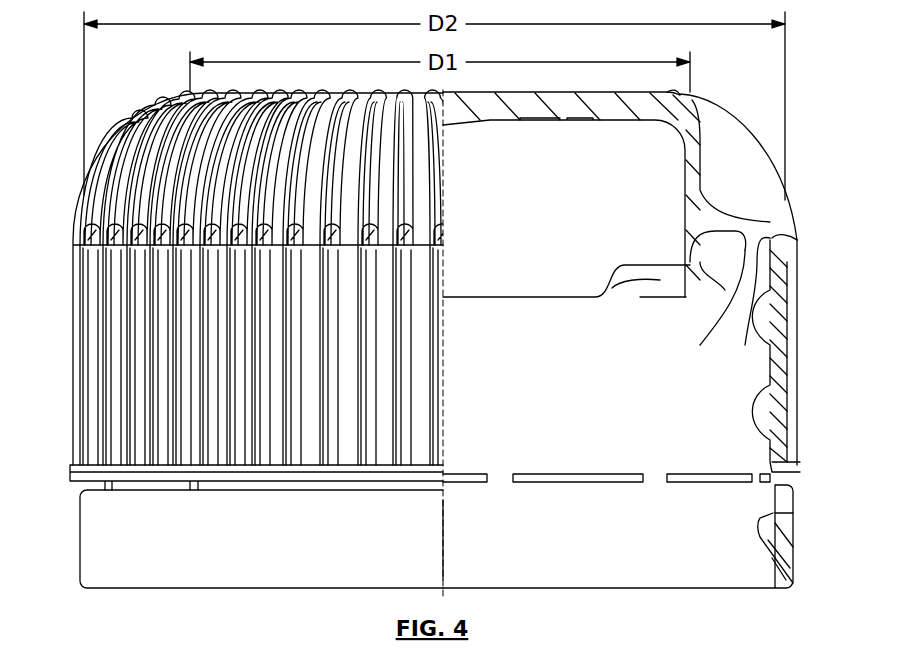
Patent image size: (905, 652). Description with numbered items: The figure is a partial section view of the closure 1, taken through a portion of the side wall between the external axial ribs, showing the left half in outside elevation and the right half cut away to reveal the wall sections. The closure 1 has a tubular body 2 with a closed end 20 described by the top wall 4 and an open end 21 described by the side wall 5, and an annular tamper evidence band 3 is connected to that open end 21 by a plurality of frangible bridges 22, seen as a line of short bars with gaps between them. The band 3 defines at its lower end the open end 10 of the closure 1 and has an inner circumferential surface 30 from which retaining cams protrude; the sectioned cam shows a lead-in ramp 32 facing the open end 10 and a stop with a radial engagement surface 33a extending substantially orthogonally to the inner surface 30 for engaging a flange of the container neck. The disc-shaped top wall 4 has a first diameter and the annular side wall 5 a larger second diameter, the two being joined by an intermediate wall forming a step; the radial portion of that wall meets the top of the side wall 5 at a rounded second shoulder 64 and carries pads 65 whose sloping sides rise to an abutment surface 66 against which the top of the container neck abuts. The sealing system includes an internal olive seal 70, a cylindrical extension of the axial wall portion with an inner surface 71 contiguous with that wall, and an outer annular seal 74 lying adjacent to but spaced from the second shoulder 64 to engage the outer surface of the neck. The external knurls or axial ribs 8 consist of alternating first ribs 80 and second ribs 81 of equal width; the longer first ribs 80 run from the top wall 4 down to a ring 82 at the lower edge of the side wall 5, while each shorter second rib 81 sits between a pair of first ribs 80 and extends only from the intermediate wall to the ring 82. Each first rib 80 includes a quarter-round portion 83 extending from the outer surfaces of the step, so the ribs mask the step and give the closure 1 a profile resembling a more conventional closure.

The closure 1 is at (52, 116).
The tubular body 2 is at (50, 497).
The tamper evidence band 3 is at (261, 539).
The top wall 4 is at (575, 118).
The side wall 5 is at (783, 355).
The axial ribs 8 is at (497, 327).
The open end 10 is at (636, 595).
The closed end 20 is at (481, 126).
The open end 21 is at (600, 505).
The frangible bridges 22 is at (657, 480).
The inner circumferential surface 30 is at (473, 540).
The lead-in ramp 32 is at (763, 550).
The radial engagement surface 33a is at (775, 513).
The second shoulder 64 is at (688, 108).
The pads 65 is at (705, 234).
The abutment surface 66 is at (703, 290).
The olive seal 70 is at (612, 288).
The inner surface 71 is at (566, 276).
The outer annular seal 74 is at (748, 300).
The first ribs 80 is at (78, 212).
The second ribs 81 is at (440, 255).
The ring 82 is at (78, 470).
The quarter-round portion 83 is at (738, 167).